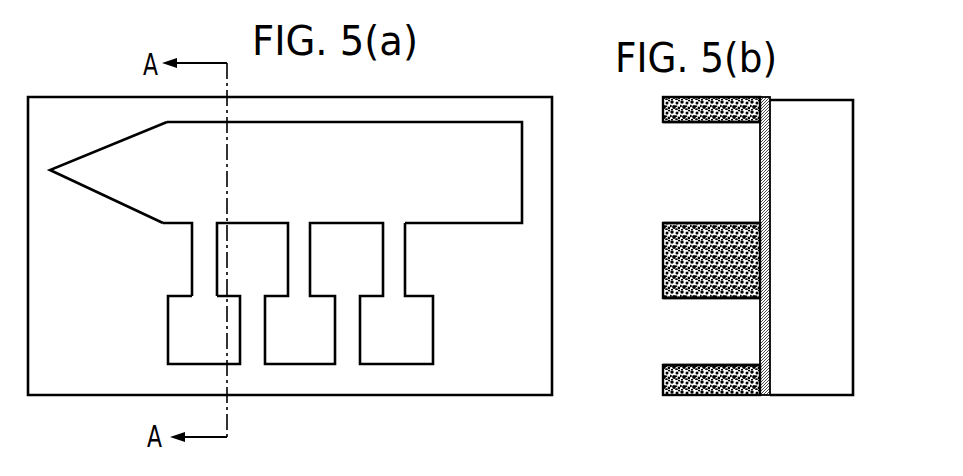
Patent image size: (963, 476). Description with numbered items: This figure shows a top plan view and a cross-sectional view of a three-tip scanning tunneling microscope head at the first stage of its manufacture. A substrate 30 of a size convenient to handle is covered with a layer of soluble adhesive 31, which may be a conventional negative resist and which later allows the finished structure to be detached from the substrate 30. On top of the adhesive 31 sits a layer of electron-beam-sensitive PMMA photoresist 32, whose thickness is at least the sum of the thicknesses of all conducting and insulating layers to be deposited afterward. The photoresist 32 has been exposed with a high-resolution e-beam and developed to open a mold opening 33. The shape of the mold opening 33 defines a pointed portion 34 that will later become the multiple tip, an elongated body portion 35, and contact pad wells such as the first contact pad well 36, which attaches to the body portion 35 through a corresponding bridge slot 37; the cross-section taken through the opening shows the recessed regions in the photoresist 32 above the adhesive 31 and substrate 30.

In FIG. 5B, the substrate 30 is at (807, 390).
In FIG. 5B, the soluble adhesive layer 31 is at (768, 397).
In FIG. 5A, the photoresist 32 is at (500, 316).
In FIG. 5B, the photoresist 32 is at (705, 397).
In FIG. 5A, the mold opening 33 is at (402, 182).
In FIG. 5B, the mold opening 33 is at (706, 165).
In FIG. 5A, the pointed portion 34 is at (135, 185).
In FIG. 5A, the elongated body portion 35 is at (463, 138).
In FIG. 5A, the first contact pad well 36 is at (177, 320).
In FIG. 5A, the bridge slot 37 is at (198, 254).